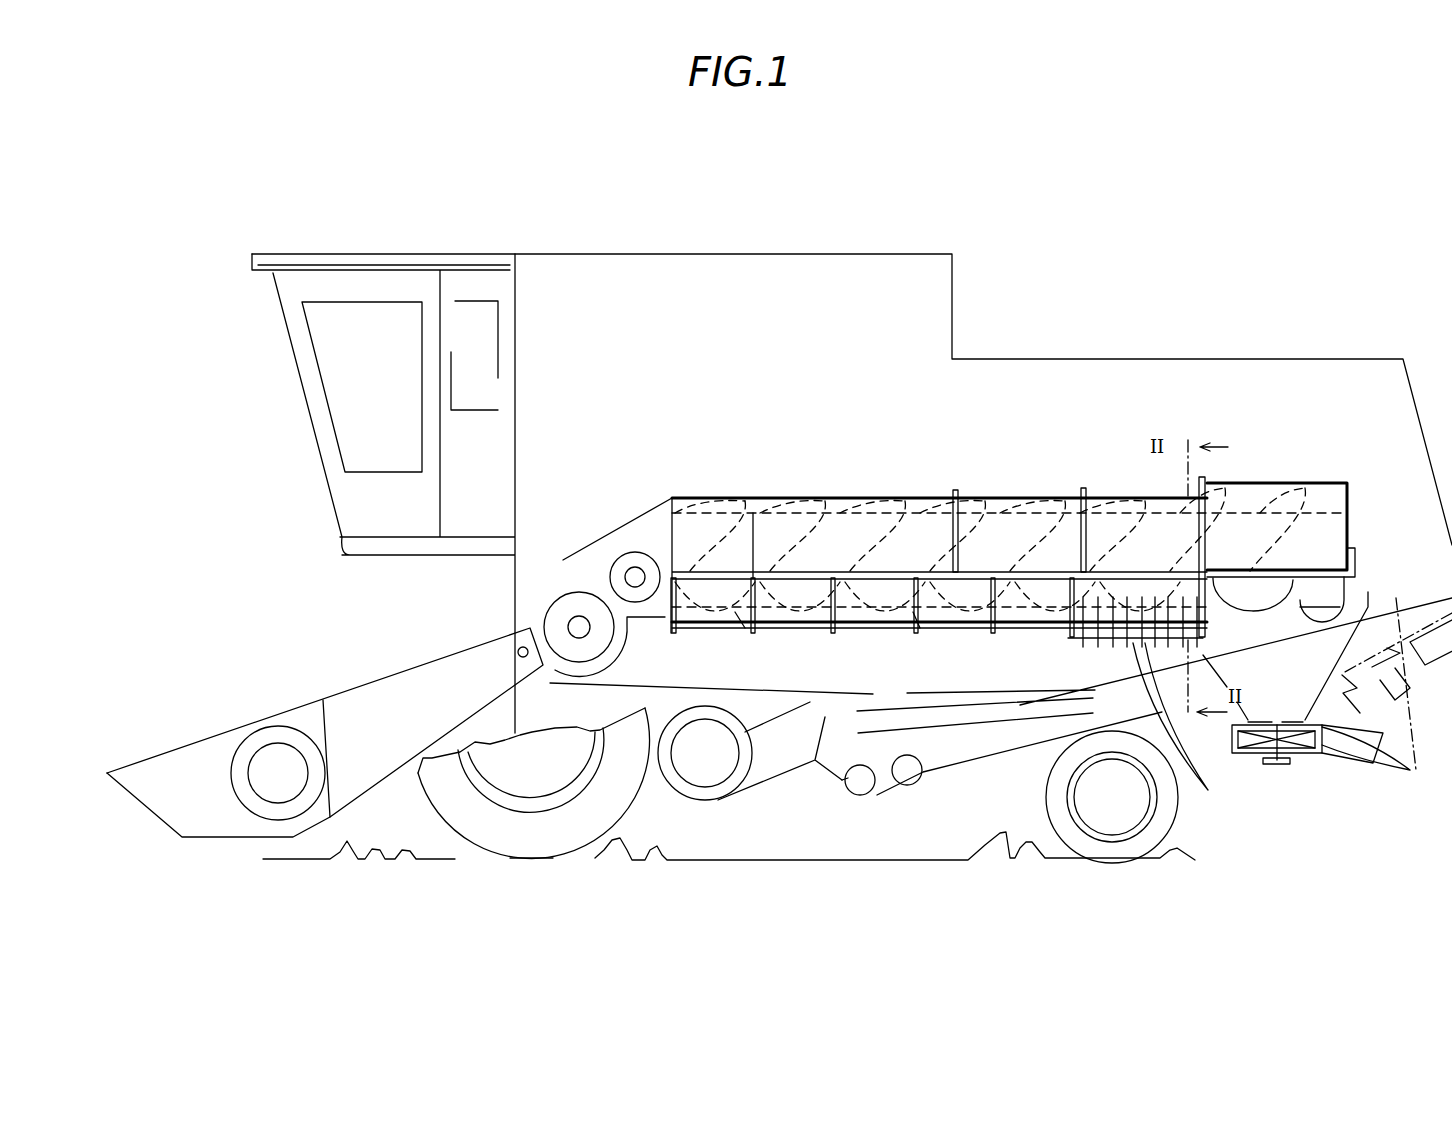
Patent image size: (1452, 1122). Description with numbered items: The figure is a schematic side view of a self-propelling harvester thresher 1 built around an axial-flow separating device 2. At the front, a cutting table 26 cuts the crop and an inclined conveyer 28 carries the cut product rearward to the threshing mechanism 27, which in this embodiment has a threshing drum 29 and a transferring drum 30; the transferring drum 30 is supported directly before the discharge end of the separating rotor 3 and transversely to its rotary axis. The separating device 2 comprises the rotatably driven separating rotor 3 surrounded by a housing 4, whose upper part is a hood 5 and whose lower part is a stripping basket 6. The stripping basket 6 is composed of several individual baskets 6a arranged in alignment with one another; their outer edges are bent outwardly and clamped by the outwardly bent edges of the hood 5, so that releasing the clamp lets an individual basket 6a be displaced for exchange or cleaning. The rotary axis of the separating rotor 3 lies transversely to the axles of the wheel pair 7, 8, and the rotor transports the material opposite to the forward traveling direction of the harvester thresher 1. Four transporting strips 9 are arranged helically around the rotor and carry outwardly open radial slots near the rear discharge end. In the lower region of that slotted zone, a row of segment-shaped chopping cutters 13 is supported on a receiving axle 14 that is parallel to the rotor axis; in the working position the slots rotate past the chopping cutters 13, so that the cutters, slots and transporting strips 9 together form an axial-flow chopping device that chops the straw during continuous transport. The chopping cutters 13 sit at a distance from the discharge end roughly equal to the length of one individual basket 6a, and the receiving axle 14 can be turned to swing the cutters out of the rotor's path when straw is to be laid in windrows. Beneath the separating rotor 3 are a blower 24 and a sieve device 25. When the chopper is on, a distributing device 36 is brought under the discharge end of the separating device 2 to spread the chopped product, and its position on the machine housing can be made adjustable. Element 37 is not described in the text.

The harvester thresher 1 is at (636, 278).
The separating device 2 is at (942, 490).
The separating rotor 3 is at (893, 490).
The housing 4 is at (1012, 497).
The hood 5 is at (1108, 490).
The stripping basket 6 is at (857, 612).
The individual basket 6a is at (820, 612).
The wheel 7 is at (455, 782).
The wheel 8 is at (1162, 823).
The transporting strips 9 is at (875, 500).
The chopping cutters 13 is at (1110, 645).
The receiving axle 14 is at (1180, 732).
The blower 24 is at (710, 765).
The sieve device 25 is at (952, 761).
The cutting table 26 is at (208, 788).
The threshing mechanism 27 is at (562, 586).
The inclined conveyer 28 is at (352, 723).
The threshing drum 29 is at (583, 612).
The transferring drum 30 is at (636, 560).
The distributing device 36 is at (1404, 766).
The rear discharge housing 37 is at (1323, 498).